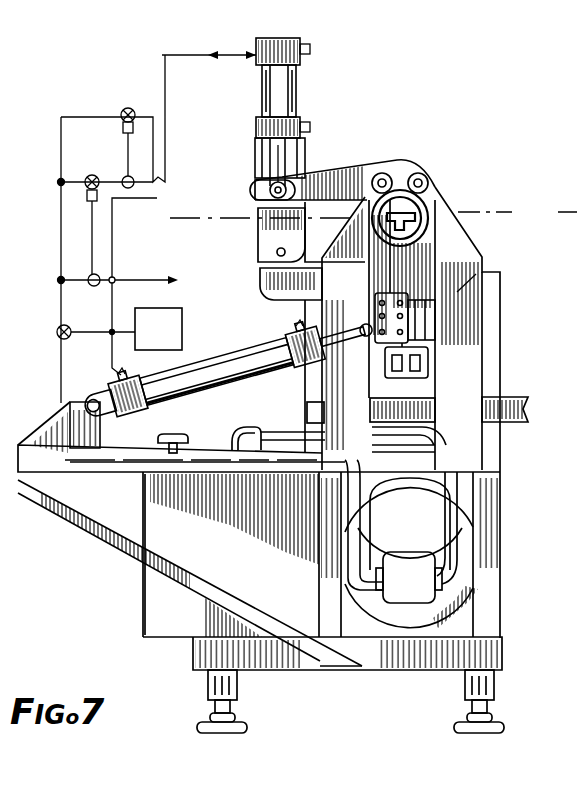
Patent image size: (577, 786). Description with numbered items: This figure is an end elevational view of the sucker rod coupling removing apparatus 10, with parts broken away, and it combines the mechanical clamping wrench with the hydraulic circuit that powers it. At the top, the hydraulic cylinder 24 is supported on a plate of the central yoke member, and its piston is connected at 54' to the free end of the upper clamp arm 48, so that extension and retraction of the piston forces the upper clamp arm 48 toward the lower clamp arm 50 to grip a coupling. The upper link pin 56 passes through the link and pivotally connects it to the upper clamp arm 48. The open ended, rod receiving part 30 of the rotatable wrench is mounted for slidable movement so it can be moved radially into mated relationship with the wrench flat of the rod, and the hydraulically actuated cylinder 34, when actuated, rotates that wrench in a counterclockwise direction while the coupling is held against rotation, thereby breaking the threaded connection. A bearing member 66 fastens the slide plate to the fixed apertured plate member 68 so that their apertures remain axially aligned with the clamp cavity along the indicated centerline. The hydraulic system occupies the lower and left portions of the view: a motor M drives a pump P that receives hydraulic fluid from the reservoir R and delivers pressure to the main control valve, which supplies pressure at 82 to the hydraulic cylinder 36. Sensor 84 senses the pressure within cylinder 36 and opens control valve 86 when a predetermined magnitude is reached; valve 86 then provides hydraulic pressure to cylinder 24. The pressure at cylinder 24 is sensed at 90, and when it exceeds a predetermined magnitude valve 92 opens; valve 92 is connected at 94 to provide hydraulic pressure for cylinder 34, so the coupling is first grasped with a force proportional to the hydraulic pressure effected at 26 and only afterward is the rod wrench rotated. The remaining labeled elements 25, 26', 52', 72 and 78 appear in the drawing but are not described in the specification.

The sucker rod coupling removing apparatus 10 is at (224, 163).
The hydraulic cylinder 24 is at (300, 90).
The piston rod 25 is at (290, 163).
The hydraulic pressure point 26 is at (322, 40).
The lower air port 26' is at (324, 117).
The rod receiving part 30 is at (430, 220).
The hydraulically actuated cylinder 34 is at (212, 362).
The hydraulic cylinder 36 is at (415, 325).
The upper clamp arm 48 is at (352, 171).
The lower clamp arm 50 is at (346, 235).
The upper clamp jaw 52' is at (252, 235).
The piston connection 54' is at (261, 284).
The upper link pin 56 is at (428, 188).
The bearing member 66 is at (415, 299).
The fixed apertured plate member 68 is at (453, 231).
The bracket 72 is at (428, 375).
The hydraulic line 78 is at (366, 355).
The hydraulic pressure supply 82 is at (143, 280).
The sensor 84 is at (93, 287).
The control valve 86 is at (90, 174).
The pressure sensing point 90 is at (127, 177).
The valve 92 is at (125, 110).
The hydraulic connection 94 is at (157, 198).
The reservoir R is at (212, 548).
The motor M is at (420, 537).
The pump P is at (418, 590).